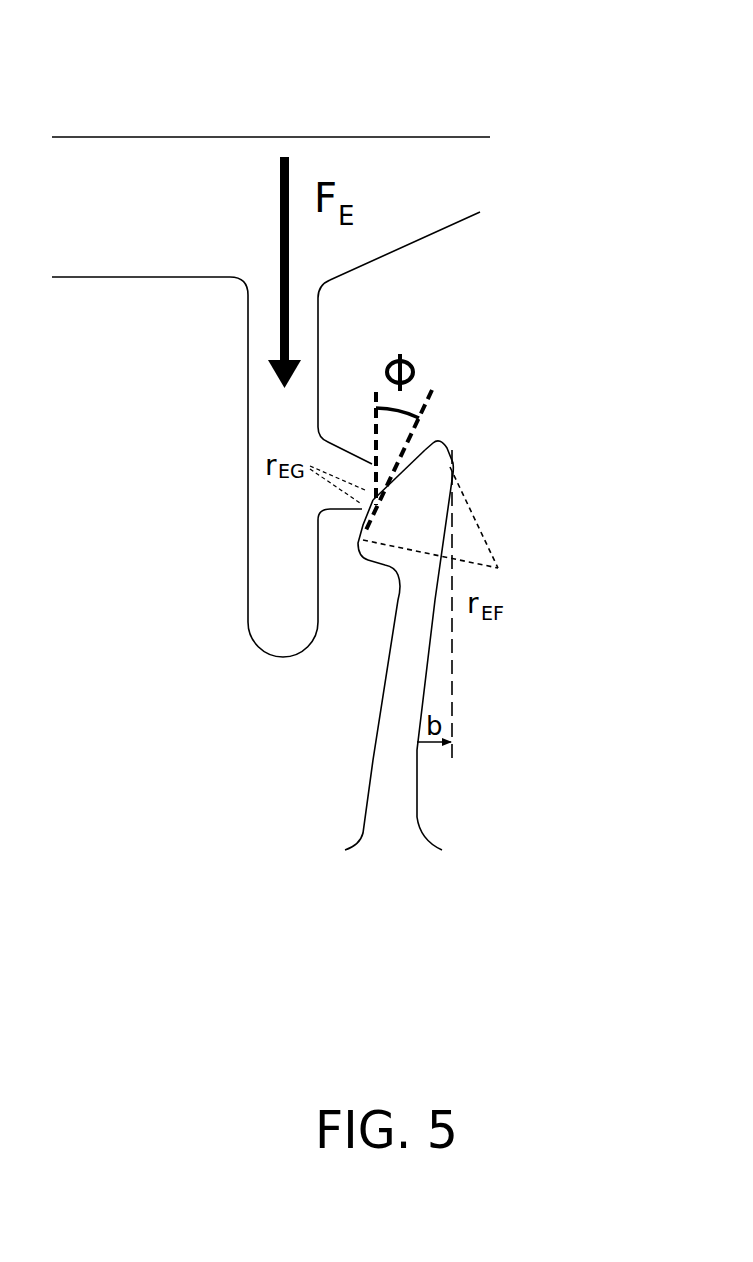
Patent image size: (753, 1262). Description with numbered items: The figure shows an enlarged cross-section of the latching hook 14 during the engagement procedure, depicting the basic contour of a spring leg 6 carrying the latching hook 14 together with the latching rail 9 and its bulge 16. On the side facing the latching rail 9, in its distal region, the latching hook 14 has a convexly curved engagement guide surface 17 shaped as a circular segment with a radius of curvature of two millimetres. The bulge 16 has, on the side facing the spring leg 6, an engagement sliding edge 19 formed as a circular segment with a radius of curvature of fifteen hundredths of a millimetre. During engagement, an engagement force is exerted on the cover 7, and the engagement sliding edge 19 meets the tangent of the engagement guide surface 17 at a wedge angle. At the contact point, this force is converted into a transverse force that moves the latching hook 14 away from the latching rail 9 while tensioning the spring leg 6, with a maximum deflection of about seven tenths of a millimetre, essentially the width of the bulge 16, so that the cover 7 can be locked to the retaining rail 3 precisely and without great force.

The cover 7 is at (113, 185).
The bulge 16 is at (355, 467).
The engagement sliding edge 19 is at (361, 507).
The latching rail 9 is at (293, 598).
The latching hook 14 is at (437, 468).
The engagement guide surface 17 is at (390, 490).
The spring leg 6 is at (390, 757).
The retaining rail 3 is at (391, 876).